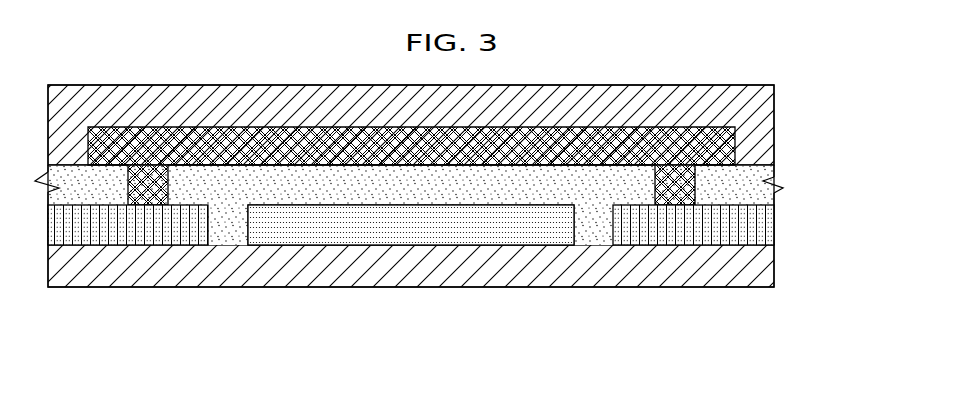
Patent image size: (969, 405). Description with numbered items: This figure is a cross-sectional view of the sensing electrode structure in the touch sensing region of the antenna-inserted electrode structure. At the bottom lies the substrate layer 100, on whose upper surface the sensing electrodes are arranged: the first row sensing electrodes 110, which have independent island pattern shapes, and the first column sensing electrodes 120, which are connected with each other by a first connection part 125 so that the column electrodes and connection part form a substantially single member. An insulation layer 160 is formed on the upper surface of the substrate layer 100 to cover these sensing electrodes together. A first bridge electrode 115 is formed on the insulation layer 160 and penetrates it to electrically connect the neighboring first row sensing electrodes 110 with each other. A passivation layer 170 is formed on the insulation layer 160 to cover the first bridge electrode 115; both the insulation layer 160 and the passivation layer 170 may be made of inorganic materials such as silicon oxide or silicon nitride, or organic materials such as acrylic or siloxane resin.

The substrate layer 100 is at (774, 267).
The first row sensing electrodes 110 is at (768, 222).
The first bridge electrode 115 is at (735, 137).
The first column sensing electrodes 120 is at (413, 228).
The first connection part 125 is at (411, 225).
The insulation layer 160 is at (782, 188).
The passivation layer 170 is at (774, 95).